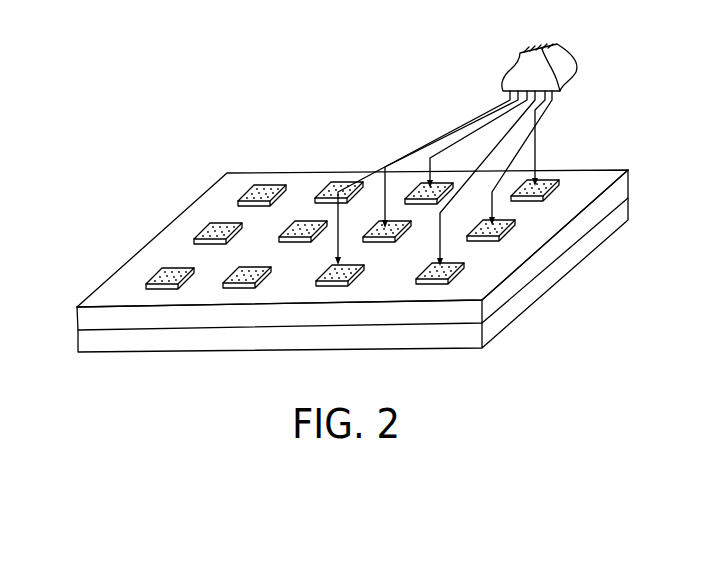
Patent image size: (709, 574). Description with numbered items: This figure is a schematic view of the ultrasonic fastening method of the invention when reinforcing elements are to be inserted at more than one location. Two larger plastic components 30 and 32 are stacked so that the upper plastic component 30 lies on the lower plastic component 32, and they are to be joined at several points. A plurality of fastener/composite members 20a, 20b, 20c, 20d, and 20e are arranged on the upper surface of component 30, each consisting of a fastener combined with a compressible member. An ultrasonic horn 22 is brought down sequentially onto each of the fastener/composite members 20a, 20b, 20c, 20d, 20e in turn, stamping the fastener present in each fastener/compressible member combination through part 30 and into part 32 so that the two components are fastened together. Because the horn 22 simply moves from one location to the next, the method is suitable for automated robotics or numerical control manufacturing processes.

The fastener/composite member 20a is at (423, 207).
The fastener/composite member 20b is at (382, 243).
The fastener/composite member 20c is at (318, 273).
The fastener/composite member 20d is at (466, 283).
The fastener/composite member 20e is at (505, 236).
The ultrasonic horn 22 is at (557, 46).
The plastic component 30 is at (628, 181).
The plastic component 32 is at (628, 207).